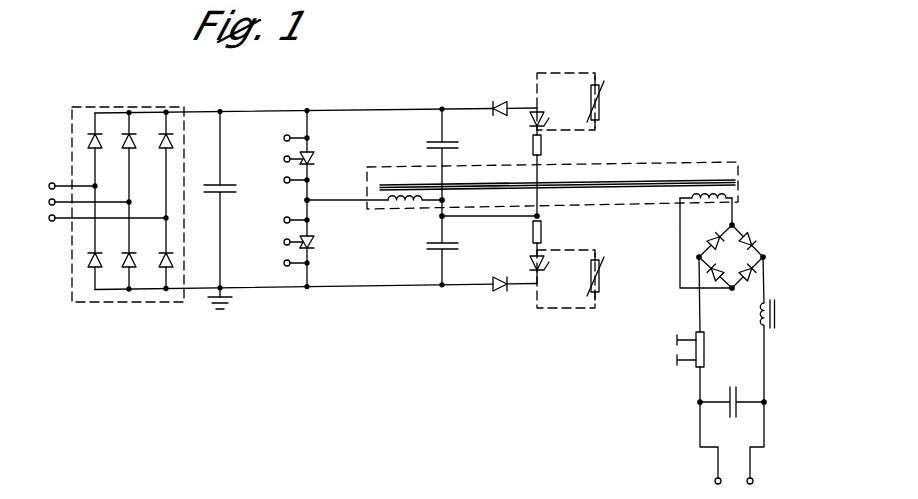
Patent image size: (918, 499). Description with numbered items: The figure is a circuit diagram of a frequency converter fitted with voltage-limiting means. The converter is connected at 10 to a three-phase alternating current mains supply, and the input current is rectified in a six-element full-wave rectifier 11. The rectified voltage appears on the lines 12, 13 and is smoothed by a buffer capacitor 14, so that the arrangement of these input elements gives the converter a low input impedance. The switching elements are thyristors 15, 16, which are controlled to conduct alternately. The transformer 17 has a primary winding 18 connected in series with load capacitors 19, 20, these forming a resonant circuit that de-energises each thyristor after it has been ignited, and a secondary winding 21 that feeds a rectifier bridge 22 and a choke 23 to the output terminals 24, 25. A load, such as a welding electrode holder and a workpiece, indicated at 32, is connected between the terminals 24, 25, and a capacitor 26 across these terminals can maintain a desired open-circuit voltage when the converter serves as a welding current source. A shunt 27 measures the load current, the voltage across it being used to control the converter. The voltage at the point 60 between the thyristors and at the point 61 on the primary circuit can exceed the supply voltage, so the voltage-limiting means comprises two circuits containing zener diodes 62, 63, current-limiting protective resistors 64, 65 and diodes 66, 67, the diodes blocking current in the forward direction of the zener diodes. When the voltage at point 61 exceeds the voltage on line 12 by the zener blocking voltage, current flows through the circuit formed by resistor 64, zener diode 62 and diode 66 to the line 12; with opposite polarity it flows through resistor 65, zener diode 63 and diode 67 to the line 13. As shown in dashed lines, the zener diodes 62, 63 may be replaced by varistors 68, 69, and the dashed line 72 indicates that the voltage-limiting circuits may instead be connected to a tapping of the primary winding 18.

The mains connection 10 is at (51, 218).
The full-wave rectifier 11 is at (157, 303).
The line 12 is at (261, 109).
The line 13 is at (269, 288).
The buffer capacitor 14 is at (228, 194).
The thyristor 15 is at (309, 155).
The thyristor 16 is at (316, 243).
The transformer 17 is at (552, 193).
The primary winding 18 is at (395, 216).
The load capacitor 19 is at (433, 140).
The load capacitor 20 is at (439, 250).
The secondary winding 21 is at (695, 192).
The rectifier bridge 22 is at (753, 247).
The choke 23 is at (760, 310).
The terminal 24 is at (717, 484).
The terminal 25 is at (752, 484).
The capacitor 26 is at (738, 388).
The shunt 27 is at (693, 368).
The load 32 is at (279, 492).
The point 60 is at (309, 198).
The point 61 is at (444, 194).
The zener diode 62 is at (540, 112).
The zener diode 63 is at (543, 266).
The current-limiting protective resistor 64 is at (541, 147).
The current-limiting protective resistor 65 is at (533, 238).
The diode 66 is at (499, 99).
The diode 67 is at (499, 291).
The varistor 68 is at (603, 104).
The varistor 69 is at (603, 279).
The dashed line 72 is at (431, 212).